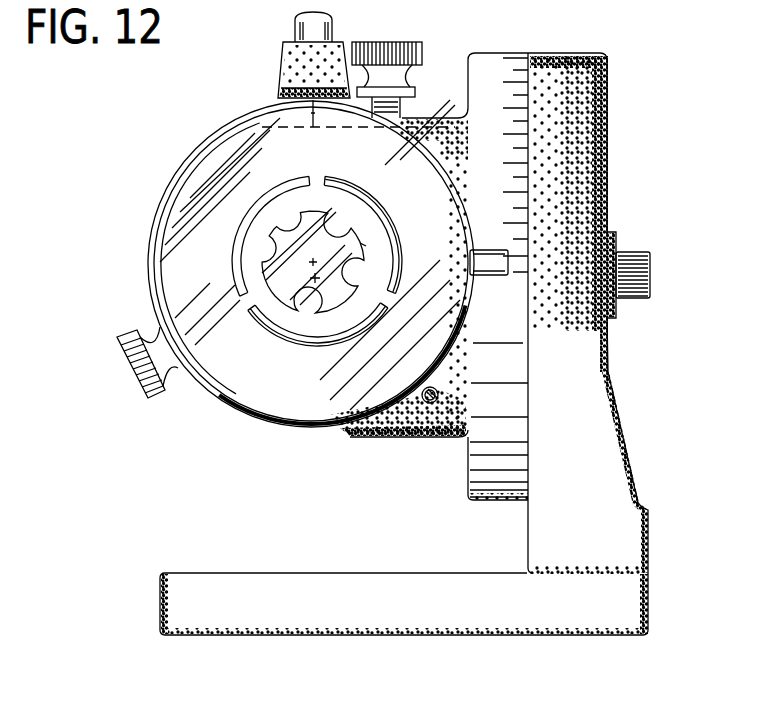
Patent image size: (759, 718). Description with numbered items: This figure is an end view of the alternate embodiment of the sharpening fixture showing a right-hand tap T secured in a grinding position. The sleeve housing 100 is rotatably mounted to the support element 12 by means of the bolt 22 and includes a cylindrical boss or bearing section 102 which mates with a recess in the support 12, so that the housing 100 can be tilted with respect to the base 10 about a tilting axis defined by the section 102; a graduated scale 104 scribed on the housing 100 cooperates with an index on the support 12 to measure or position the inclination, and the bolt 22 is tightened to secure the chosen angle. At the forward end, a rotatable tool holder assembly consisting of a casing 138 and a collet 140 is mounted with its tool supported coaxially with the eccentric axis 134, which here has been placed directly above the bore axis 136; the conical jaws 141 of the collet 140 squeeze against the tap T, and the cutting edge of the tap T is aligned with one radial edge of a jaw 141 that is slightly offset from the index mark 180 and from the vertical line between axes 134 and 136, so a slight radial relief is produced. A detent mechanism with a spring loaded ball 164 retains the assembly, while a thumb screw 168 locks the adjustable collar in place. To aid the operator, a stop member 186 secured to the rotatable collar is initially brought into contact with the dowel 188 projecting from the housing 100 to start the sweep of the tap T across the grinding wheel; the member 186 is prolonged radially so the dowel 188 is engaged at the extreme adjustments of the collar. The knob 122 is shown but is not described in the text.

The base 10 is at (312, 573).
The support element 12 is at (590, 467).
The bolt 22 is at (636, 252).
The sleeve housing 100 is at (372, 437).
The cylindrical boss or bearing section 102 is at (612, 320).
The graduated scale 104 is at (505, 53).
The locking knob 122 is at (400, 42).
The eccentric axis 134 is at (313, 262).
The bore axis 136 is at (300, 297).
The casing 138 is at (232, 135).
The collet 140 is at (385, 212).
The conical jaws 141 is at (300, 185).
The spring loaded ball 164 is at (284, 86).
The thumb screw 168 is at (118, 350).
The index mark 180 is at (282, 108).
The stop member 186 is at (490, 278).
The dowel 188 is at (432, 405).
The right-hand tap T is at (362, 244).